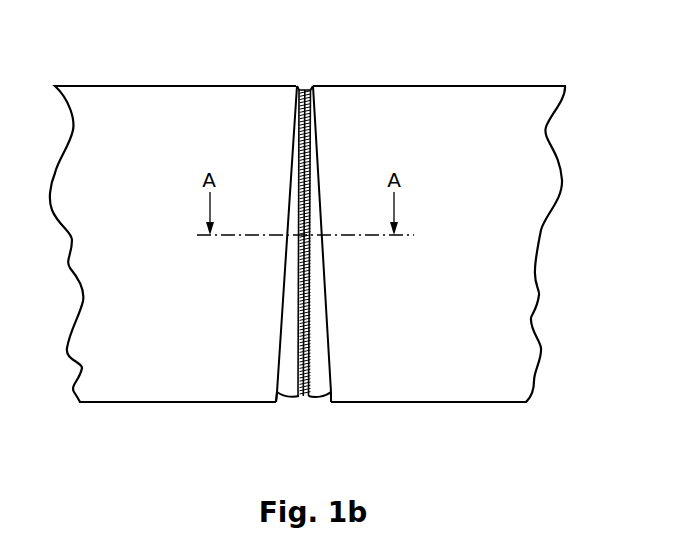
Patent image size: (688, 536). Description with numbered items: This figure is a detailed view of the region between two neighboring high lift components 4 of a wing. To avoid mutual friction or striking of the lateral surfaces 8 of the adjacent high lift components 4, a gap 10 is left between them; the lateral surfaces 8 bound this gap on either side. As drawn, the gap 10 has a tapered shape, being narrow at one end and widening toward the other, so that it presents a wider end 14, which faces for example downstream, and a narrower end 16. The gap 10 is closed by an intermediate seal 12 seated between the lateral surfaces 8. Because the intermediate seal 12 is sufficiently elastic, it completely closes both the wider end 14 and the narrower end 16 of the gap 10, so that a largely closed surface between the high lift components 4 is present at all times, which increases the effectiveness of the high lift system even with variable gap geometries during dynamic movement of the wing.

The high lift component 4 is at (143, 105).
The lateral surface 8 is at (293, 142).
The gap 10 is at (306, 412).
The intermediate seal 12 is at (322, 353).
The wider end 14 is at (260, 385).
The narrower end 16 is at (328, 98).